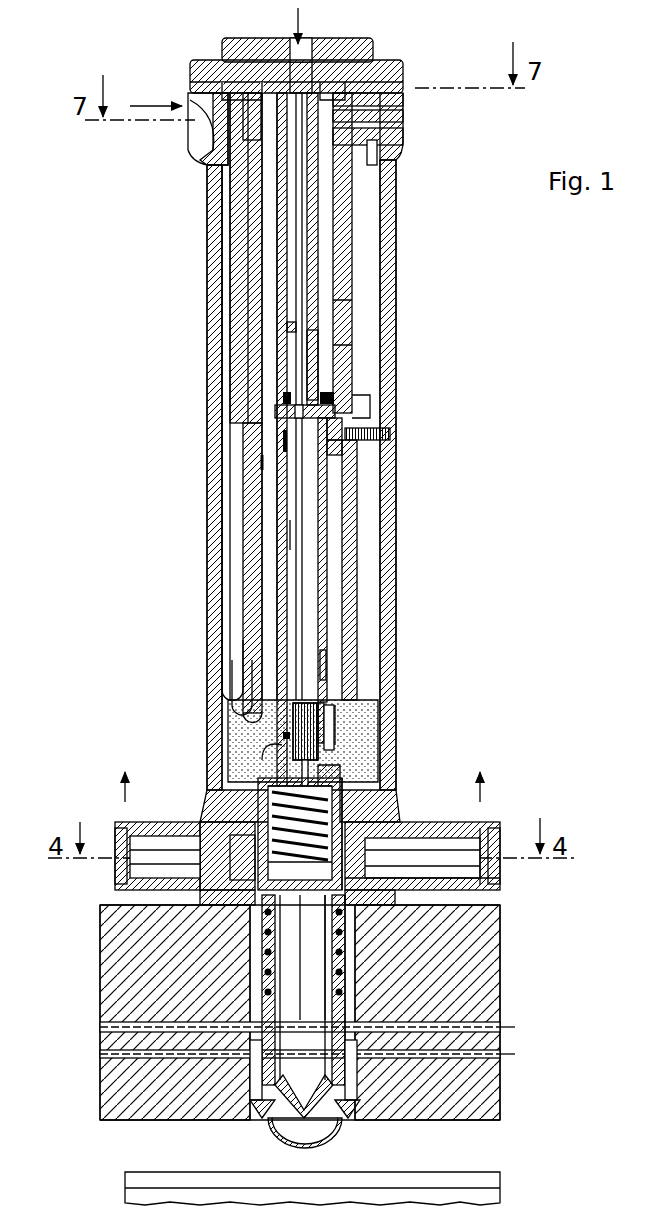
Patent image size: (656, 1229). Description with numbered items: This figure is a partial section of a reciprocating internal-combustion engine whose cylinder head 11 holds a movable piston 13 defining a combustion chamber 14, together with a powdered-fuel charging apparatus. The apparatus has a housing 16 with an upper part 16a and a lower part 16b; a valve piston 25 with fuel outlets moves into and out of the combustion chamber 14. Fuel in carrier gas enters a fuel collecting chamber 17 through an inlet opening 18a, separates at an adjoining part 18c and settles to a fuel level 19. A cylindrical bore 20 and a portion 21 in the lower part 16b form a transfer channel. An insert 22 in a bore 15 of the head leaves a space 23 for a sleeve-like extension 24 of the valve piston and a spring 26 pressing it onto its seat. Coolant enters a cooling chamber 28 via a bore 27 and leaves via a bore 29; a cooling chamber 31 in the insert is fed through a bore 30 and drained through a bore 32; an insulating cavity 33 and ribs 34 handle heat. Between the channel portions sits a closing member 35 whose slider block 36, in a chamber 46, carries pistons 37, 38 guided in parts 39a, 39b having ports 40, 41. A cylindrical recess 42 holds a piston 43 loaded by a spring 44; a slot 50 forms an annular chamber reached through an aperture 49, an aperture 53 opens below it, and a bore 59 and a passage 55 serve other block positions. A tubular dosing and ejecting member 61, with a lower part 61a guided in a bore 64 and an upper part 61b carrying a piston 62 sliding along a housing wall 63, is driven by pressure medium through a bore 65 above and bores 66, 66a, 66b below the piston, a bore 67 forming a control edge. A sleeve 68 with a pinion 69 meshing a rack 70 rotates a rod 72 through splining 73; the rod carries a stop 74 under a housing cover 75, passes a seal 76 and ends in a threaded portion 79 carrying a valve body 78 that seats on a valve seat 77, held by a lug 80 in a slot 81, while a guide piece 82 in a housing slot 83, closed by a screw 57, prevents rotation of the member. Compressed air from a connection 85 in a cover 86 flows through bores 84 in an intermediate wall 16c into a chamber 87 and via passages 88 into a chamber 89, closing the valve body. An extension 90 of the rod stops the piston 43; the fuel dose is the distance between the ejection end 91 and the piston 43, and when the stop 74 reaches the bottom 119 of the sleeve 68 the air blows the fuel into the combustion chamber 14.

The cylinder head 11 is at (125, 1110).
The piston 13 is at (493, 1182).
The combustion chamber 14 is at (470, 1143).
The bore 15 is at (350, 1115).
The housing 16 is at (410, 568).
The upper part 16a is at (388, 410).
The lower part 16b is at (350, 985).
The intermediate wall 16c is at (240, 368).
The fuel collecting chamber 17 is at (237, 692).
The inlet opening 18a is at (203, 126).
The part adjoining inlet opening 18c is at (212, 188).
The fuel level 19 is at (335, 712).
The cylindrical bore 20 is at (323, 825).
The transfer channel portion 21 is at (304, 990).
The insert 22 is at (262, 1118).
The space 23 is at (263, 953).
The sleeve-like extension 24 is at (352, 962).
The valve piston 25 is at (330, 1140).
The spring 26 is at (350, 935).
The bore 27 is at (100, 1022).
The cooling chamber 28 is at (283, 1076).
The bore 29 is at (562, 1027).
The bore 30 is at (100, 1058).
The cooling chamber 31 is at (352, 1083).
The outlet channel 32 is at (562, 1054).
The insulating cavity 33 is at (297, 1132).
The ribs 34 is at (303, 1080).
The closing member 35 is at (497, 832).
The slider block 36 is at (215, 822).
The piston 37 is at (148, 860).
The piston 38 is at (405, 855).
The closing member part 39a is at (503, 838).
The closing member part 39b is at (118, 838).
The port 40 is at (140, 827).
The port 41 is at (483, 827).
The cylindrical recess 42 is at (272, 820).
The piston 43 is at (330, 800).
The spring 44 is at (375, 808).
The chamber 46 is at (402, 880).
The aperture 49 is at (368, 912).
The slot 50 is at (278, 868).
The aperture 53 is at (305, 888).
The passage 55 is at (232, 905).
The screw 57 is at (370, 433).
The bore 59 is at (278, 858).
The dosing and ejecting member 61 is at (272, 484).
The lower part 61a is at (283, 574).
The upper part 61b is at (283, 218).
The piston 62 is at (252, 105).
The cylindrical housing wall 63 is at (268, 248).
The bore 64 is at (280, 720).
The bore 65 is at (395, 100).
The bore 66 is at (418, 100).
The bore 66a is at (347, 323).
The bore 66b is at (340, 402).
The bore 67 is at (400, 123).
The sleeve 68 is at (317, 228).
The pinion 69 is at (338, 92).
The rack 70 is at (378, 86).
The rod 72 is at (300, 287).
The splining 73 is at (307, 363).
The stop 74 is at (304, 90).
The housing cover 75 is at (215, 72).
The seal 76 is at (280, 410).
The valve seat 77 is at (327, 775).
The valve body 78 is at (297, 752).
The threaded portion 79 is at (313, 703).
The lug 80 is at (345, 700).
The slot 81 is at (328, 672).
The guide piece 82 is at (323, 460).
The slot 83 is at (355, 505).
The bores 84 is at (250, 296).
The connection 85 is at (293, 52).
The further cover 86 is at (258, 68).
The chamber 87 is at (262, 460).
The passages 88 is at (283, 450).
The chamber 89 is at (290, 535).
The extension 90 is at (302, 776).
The ejection end 91 is at (263, 757).
The bottom of sleeve 119 is at (290, 323).